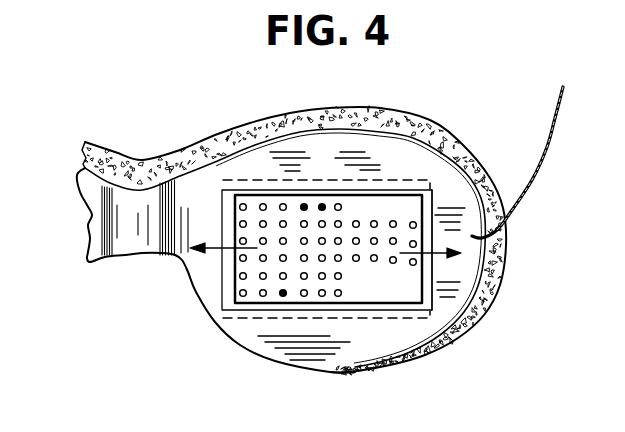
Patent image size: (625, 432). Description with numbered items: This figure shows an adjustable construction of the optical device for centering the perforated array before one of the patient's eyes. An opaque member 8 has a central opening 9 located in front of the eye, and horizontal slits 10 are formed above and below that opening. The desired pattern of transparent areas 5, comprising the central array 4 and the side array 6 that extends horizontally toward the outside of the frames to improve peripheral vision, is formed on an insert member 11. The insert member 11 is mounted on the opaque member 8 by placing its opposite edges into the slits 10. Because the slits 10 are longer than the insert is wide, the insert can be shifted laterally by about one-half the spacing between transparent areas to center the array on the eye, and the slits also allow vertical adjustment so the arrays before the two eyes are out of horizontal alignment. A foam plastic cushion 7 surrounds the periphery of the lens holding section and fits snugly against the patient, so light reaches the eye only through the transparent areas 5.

The central array 4 is at (249, 281).
The transparent areas 5 is at (322, 207).
The side array 6 is at (377, 219).
The foam plastic cushion 7 is at (204, 160).
The opaque member 8 is at (370, 138).
The central opening 9 is at (278, 202).
The horizontal slits 10 is at (417, 188).
The insert member 11 is at (432, 272).